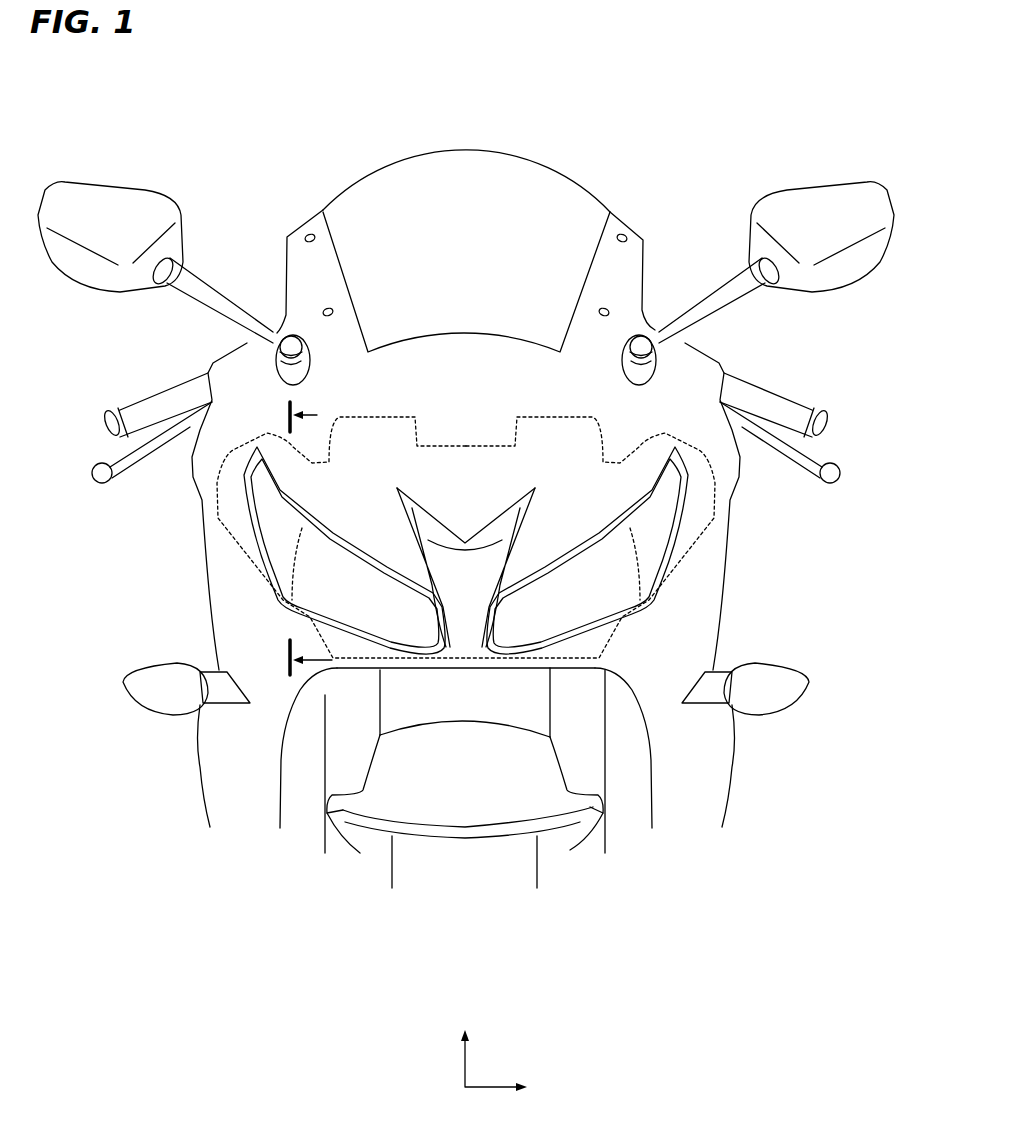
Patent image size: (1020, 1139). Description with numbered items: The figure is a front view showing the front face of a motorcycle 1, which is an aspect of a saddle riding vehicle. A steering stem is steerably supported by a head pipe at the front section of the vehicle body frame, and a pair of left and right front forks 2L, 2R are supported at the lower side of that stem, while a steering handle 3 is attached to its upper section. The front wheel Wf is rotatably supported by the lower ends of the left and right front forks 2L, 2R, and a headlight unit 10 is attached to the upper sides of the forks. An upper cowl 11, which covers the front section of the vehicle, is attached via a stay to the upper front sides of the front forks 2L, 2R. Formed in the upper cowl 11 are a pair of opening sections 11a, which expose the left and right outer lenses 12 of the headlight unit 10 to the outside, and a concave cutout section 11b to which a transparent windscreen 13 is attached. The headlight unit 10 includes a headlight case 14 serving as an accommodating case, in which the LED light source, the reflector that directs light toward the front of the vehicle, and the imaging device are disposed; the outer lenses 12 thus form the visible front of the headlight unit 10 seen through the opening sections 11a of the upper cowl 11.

The motorcycle 1 is at (752, 110).
The right front fork 2R is at (337, 745).
The left front fork 2L is at (593, 745).
The steering handle 3 is at (763, 403).
The headlight unit 10 is at (665, 583).
The upper cowl 11 is at (627, 312).
The opening sections 11a is at (262, 538).
The concave cutout section 11b is at (600, 250).
The outer lenses 12 is at (337, 600).
The windscreen 13 is at (418, 190).
The headlight case 14 is at (480, 594).
The front wheel Wf is at (525, 870).